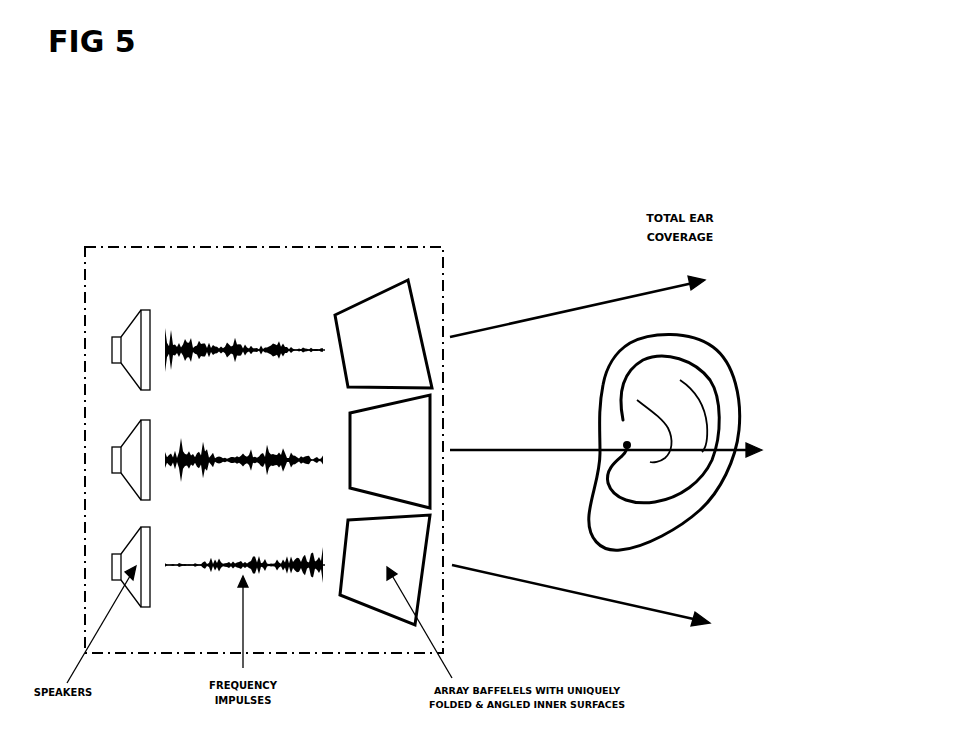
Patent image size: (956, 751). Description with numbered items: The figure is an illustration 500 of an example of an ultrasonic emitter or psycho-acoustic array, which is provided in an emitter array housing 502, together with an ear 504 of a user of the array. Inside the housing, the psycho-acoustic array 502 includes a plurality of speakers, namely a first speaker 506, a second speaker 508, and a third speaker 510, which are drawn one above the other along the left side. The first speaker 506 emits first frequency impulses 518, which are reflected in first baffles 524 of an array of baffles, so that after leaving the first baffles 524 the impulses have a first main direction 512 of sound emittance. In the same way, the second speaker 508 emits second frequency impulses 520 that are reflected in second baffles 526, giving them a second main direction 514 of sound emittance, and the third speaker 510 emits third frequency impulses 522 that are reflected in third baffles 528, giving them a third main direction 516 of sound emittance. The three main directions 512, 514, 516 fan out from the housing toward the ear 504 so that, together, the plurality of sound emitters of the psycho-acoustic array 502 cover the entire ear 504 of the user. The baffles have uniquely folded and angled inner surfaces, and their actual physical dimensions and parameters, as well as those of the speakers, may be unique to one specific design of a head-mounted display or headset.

The illustration 500 is at (715, 107).
The emitter array housing 502 is at (318, 202).
The ear 504 is at (720, 397).
The first speaker 506 is at (118, 364).
The second speaker 508 is at (118, 473).
The third speaker 510 is at (118, 580).
The first main direction of sound emittance 512 is at (542, 315).
The second main direction of sound emittance 514 is at (518, 450).
The third main direction of sound emittance 516 is at (682, 600).
The first frequency impulses 518 is at (192, 343).
The second frequency impulses 520 is at (207, 445).
The third frequency impulses 522 is at (197, 563).
The first baffles 524 is at (400, 335).
The second baffles 526 is at (406, 458).
The third baffles 528 is at (407, 570).